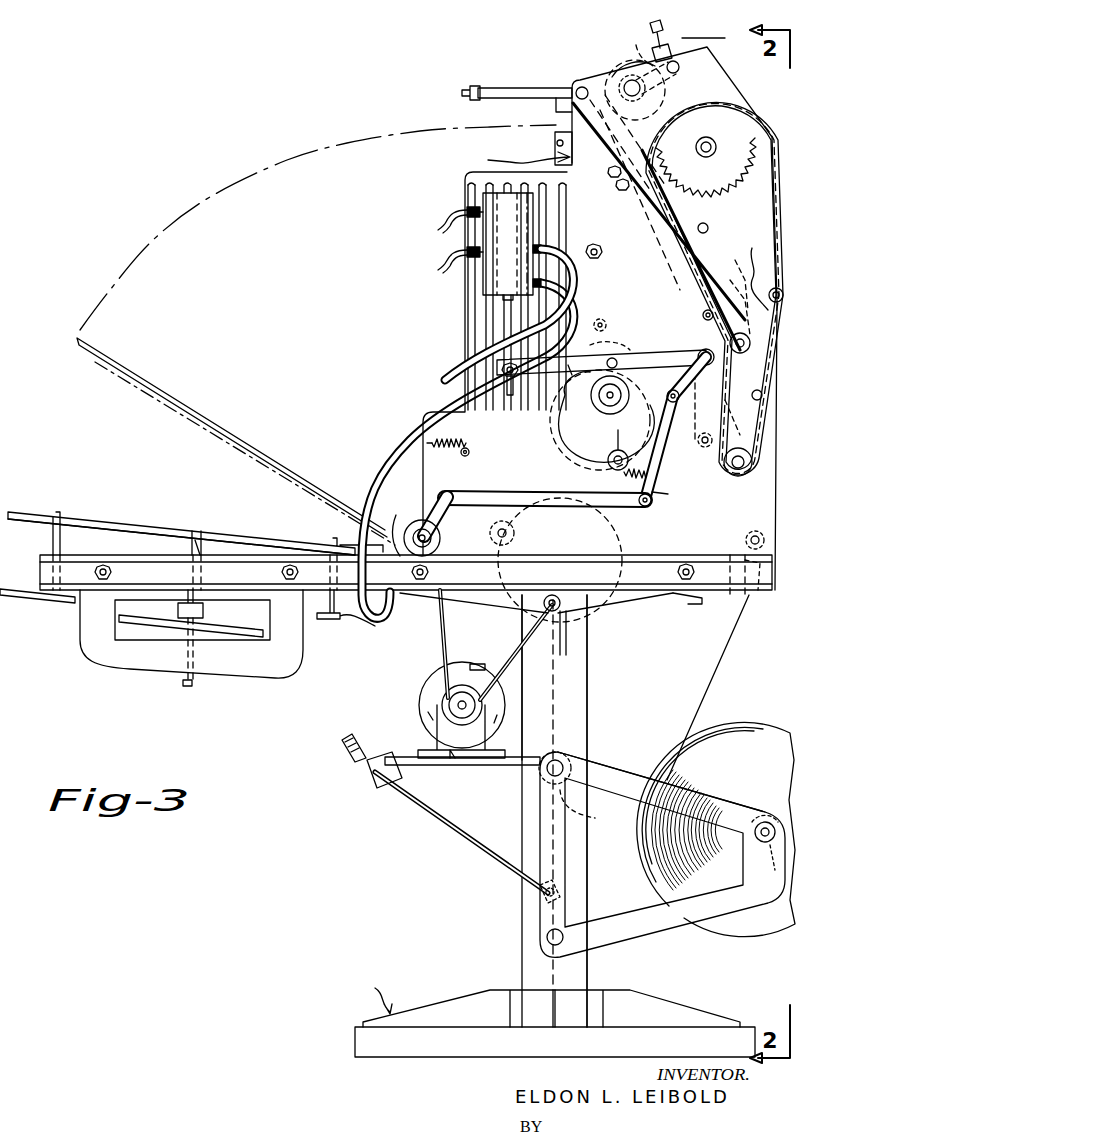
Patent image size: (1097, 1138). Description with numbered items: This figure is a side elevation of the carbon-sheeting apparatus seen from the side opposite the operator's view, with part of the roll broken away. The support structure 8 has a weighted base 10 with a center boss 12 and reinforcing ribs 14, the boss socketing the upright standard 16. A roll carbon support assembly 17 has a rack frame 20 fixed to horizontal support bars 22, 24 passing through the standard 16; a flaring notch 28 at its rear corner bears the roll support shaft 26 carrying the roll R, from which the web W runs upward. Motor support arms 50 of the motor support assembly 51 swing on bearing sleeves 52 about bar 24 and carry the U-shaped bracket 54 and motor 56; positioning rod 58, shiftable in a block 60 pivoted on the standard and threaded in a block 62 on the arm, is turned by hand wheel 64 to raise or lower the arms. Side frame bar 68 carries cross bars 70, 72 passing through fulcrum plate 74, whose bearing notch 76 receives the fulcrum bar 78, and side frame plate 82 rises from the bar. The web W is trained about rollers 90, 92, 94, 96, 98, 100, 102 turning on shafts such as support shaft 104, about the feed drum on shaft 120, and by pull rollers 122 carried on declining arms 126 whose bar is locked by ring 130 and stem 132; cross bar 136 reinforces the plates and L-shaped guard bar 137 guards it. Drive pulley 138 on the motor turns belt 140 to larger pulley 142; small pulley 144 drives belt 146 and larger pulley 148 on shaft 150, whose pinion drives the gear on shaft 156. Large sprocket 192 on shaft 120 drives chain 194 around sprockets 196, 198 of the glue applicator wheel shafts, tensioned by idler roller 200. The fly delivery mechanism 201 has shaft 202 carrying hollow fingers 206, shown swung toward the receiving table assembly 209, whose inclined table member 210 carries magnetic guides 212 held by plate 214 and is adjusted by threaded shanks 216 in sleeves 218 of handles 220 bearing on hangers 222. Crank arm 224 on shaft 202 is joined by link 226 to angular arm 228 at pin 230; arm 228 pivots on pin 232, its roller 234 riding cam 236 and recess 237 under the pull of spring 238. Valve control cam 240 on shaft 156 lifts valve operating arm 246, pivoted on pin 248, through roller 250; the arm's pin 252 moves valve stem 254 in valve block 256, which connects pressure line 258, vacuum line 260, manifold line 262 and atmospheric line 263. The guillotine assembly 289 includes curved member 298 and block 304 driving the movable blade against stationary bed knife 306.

The support structure 8 is at (383, 986).
The base 10 is at (355, 1048).
The center boss 12 is at (522, 993).
The reinforcing ribs 14 is at (430, 1005).
The standard 16 is at (588, 720).
The roll carbon support assembly 17 is at (675, 924).
The rack frame 20 is at (620, 770).
The horizontal support bar 22 is at (556, 946).
The horizontal support bar 24 is at (550, 750).
The roll support shaft 26 is at (760, 861).
The flaring notches 28 is at (765, 818).
The motor support arms 50 is at (492, 765).
The motor support assembly 51 is at (454, 760).
The bearing sleeves 52 is at (593, 810).
The motor support bracket 54 is at (432, 692).
The motor 56 is at (474, 664).
The positioning rod 58 is at (418, 806).
The block 60 is at (580, 878).
The block 62 is at (368, 786).
The hand wheel 64 is at (352, 742).
The side frame bar 68 is at (636, 558).
The cross bar 70 is at (696, 562).
The cross bar 72 is at (416, 580).
The fulcrum plates 74 is at (636, 598).
The bearing notches 76 is at (562, 643).
The fulcrum bar 78 is at (552, 612).
The side frame plate 82 is at (695, 604).
The roller 90 is at (740, 575).
The roller 92 is at (778, 414).
The roller 94 is at (717, 406).
The roller 96 is at (690, 459).
The roller 98 is at (690, 345).
The roller 100 is at (725, 300).
The roller 102 is at (724, 276).
The guide roller support shaft 104 is at (750, 530).
The feed drum support shaft 120 is at (697, 159).
The pull rollers 122 is at (618, 78).
The arms 126 is at (636, 45).
The ring 130 is at (693, 63).
The stem 132 is at (664, 27).
The cross bar 136 is at (578, 86).
The guard bar 137 is at (462, 93).
The drive pulley 138 is at (480, 690).
The belt 140 is at (447, 625).
The pulley 142 is at (520, 645).
The pulley 144 is at (514, 533).
The belt 146 is at (560, 560).
The pulley 148 is at (560, 460).
The shaft 150 is at (630, 451).
The shaft 156 is at (630, 393).
The large sprocket 192 is at (722, 225).
The chain 194 is at (706, 170).
The sprocket 196 is at (723, 362).
The sprocket 198 is at (724, 458).
The idler roller 200 is at (751, 268).
The fly delivery mechanism 201 is at (205, 396).
The shaft 202 is at (418, 526).
The fingers 206 is at (370, 470).
The receiving table assembly 209 is at (200, 512).
The table member 210 is at (140, 525).
The magnetic guides 212 is at (58, 522).
The flat plate 214 is at (20, 594).
The threaded support shanks 216 is at (220, 540).
The sleeves 218 is at (210, 610).
The handles 220 is at (240, 638).
The hangers 222 is at (226, 680).
The crank arm 224 is at (398, 515).
The link 226 is at (478, 490).
The angular arm 228 is at (668, 496).
The pin 230 is at (650, 504).
The pin 232 is at (598, 250).
The roller 234 is at (667, 400).
The cam 236 is at (548, 420).
The cam recess 237 is at (602, 417).
The contractile spring 238 is at (448, 440).
The valve control cam 240 is at (585, 327).
The valve operating arm 246 is at (700, 350).
The pin 248 is at (706, 307).
The roller 250 is at (609, 351).
The pin 252 is at (452, 360).
The valve stem 254 is at (504, 318).
The valve block 256 is at (483, 278).
The pressure line 258 is at (440, 226).
The vacuum line 260 is at (445, 254).
The line 262 is at (570, 268).
The line 263 is at (572, 296).
The knife assembly 289 is at (512, 153).
The curved member 298 is at (660, 255).
The block 304 is at (555, 138).
The bed knife 306 is at (556, 106).
The roll R is at (748, 740).
The web W is at (730, 652).